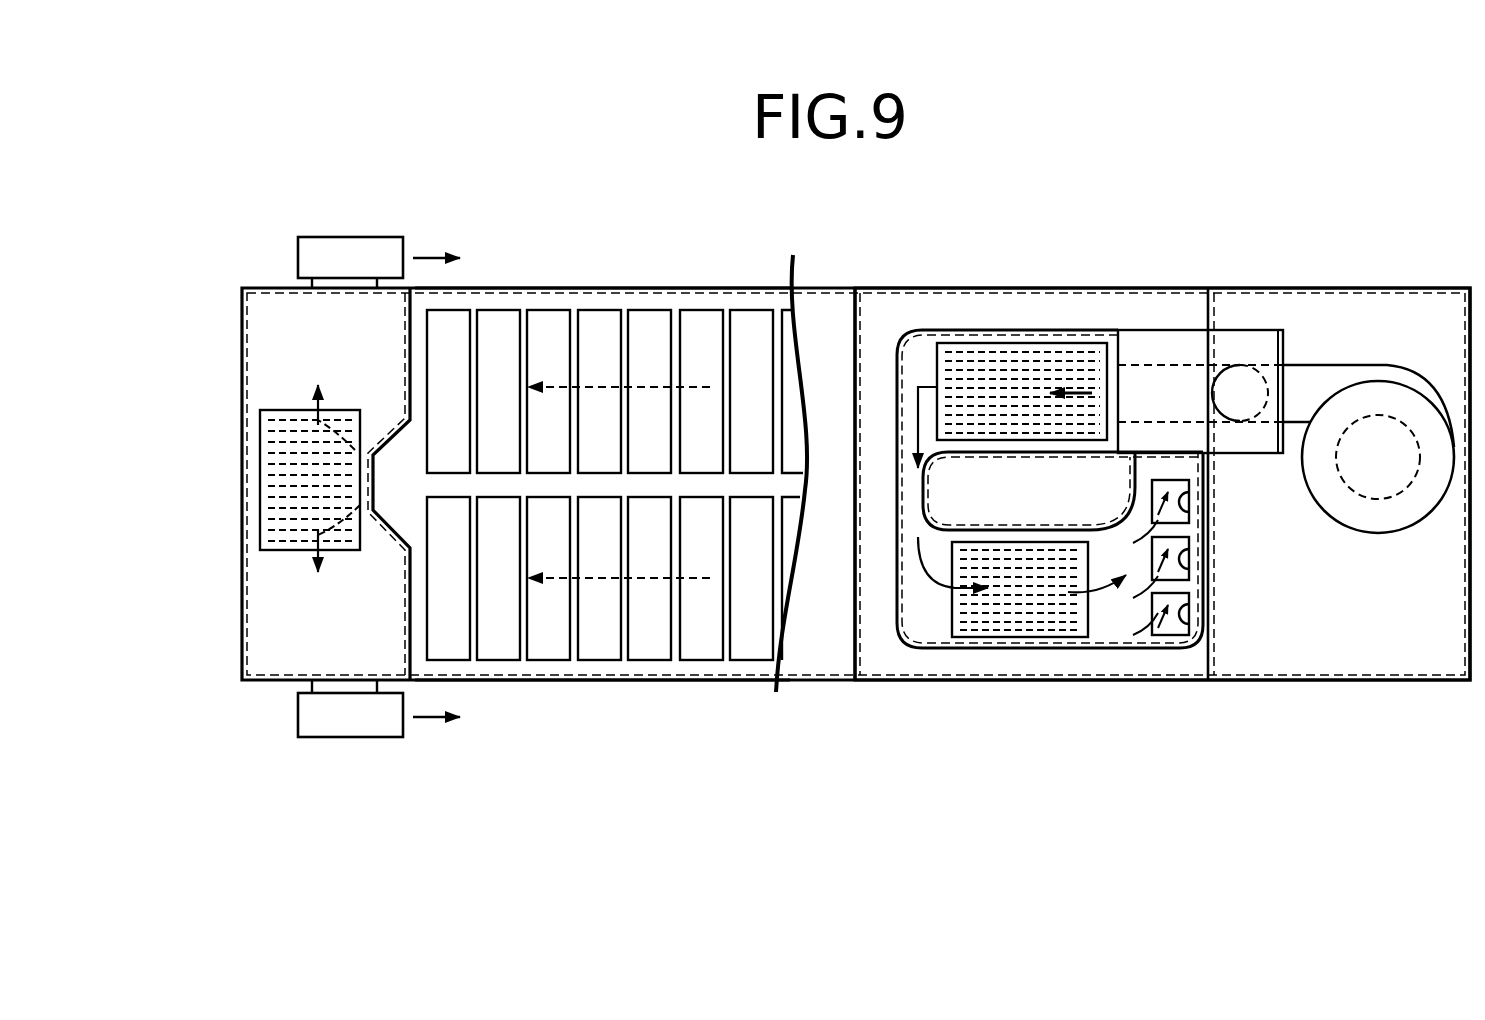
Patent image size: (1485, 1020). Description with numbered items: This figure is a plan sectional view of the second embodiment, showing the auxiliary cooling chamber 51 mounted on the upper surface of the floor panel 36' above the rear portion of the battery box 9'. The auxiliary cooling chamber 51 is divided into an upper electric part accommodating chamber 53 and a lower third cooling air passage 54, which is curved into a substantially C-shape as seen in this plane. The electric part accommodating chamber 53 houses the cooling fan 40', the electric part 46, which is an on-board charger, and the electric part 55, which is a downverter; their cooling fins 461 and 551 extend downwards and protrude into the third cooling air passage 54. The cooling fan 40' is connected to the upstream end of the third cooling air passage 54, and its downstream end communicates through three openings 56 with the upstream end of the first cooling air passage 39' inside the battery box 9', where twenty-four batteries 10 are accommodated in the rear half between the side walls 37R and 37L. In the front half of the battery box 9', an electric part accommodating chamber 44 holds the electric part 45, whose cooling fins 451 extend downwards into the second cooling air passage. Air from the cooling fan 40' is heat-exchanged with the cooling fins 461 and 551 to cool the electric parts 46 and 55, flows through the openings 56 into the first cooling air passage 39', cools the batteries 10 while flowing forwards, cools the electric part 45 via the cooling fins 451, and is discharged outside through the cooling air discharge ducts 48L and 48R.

The battery box 9' is at (608, 242).
The batteries 10 is at (518, 435).
The floor panel 36' is at (821, 453).
The right side wall 37R is at (537, 290).
The left side wall 37L is at (603, 682).
The first cooling air passage 39' is at (608, 450).
The cooling fan 40' is at (1286, 416).
The electric part accommodating chamber 44 is at (403, 355).
The electric part 45 is at (283, 407).
The cooling fins 451 is at (278, 462).
The electric part 46 is at (995, 541).
The cooling fins 461 is at (1050, 562).
The cooling air discharge duct 48R is at (367, 247).
The cooling air discharge duct 48L is at (360, 723).
The auxiliary cooling chamber 51 is at (1110, 278).
The electric part accommodating chamber 53 is at (1300, 610).
The third cooling air passage 54 is at (948, 635).
The electric part 55 is at (982, 341).
The cooling fins 551 is at (1055, 368).
The openings 56 is at (1191, 618).